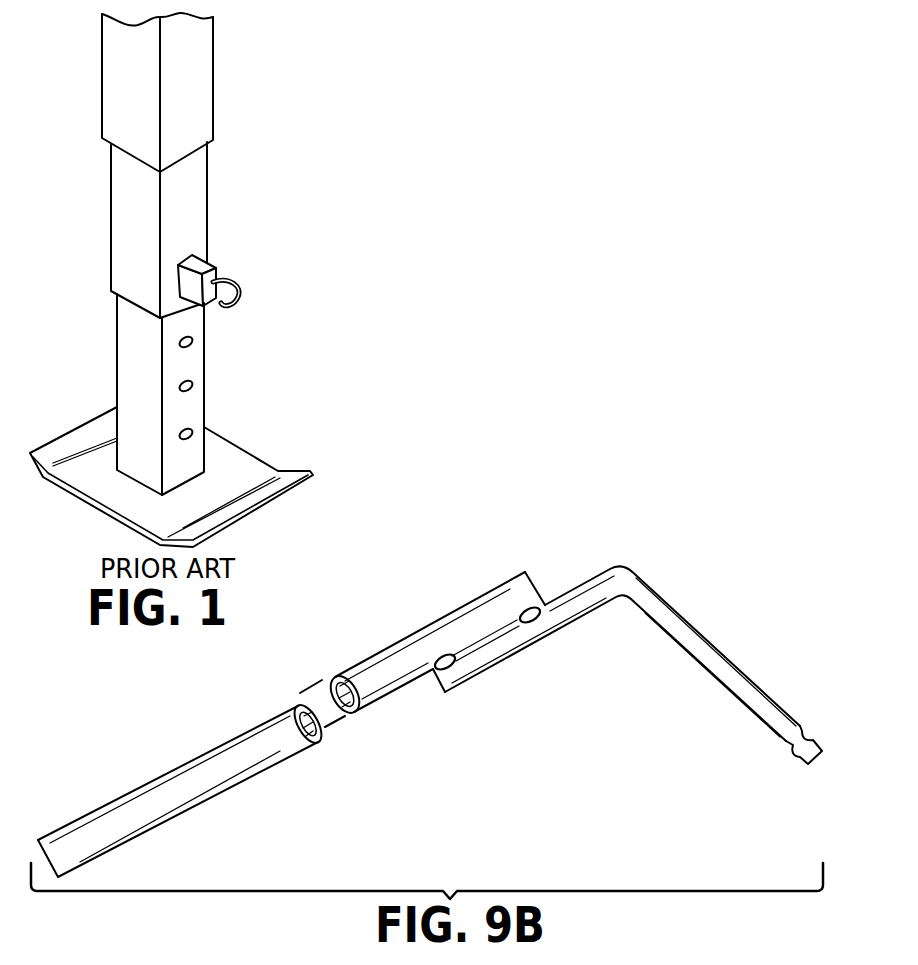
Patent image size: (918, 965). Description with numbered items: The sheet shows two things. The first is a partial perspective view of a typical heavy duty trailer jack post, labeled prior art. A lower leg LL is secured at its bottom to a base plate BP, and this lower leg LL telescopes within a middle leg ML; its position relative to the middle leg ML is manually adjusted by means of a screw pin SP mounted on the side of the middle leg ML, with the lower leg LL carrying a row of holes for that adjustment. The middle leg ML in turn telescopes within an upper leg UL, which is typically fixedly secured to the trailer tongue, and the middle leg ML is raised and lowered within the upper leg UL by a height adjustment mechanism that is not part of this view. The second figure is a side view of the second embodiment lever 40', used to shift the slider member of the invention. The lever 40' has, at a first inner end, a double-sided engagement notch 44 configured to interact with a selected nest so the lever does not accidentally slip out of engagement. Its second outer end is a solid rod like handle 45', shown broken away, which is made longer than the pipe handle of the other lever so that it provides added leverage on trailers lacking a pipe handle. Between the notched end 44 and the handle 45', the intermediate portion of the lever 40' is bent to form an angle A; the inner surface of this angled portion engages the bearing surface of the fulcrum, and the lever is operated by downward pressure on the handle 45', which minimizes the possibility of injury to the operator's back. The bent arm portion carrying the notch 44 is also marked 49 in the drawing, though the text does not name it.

In FIG. 1, the upper leg UL is at (198, 84).
In FIG. 1, the middle leg ML is at (198, 184).
In FIG. 1, the screw pin SP is at (226, 307).
In FIG. 1, the lower leg LL is at (197, 367).
In FIG. 1, the base plate BP is at (230, 457).
In FIG. 9B, the lever 40' is at (435, 645).
In FIG. 9B, the solid rod like handle 45' is at (191, 778).
In FIG. 9B, the angled arm 49 is at (707, 647).
In FIG. 9B, the double-sided engagement notch 44 is at (792, 747).
In FIG. 9B, the angle A is at (656, 622).